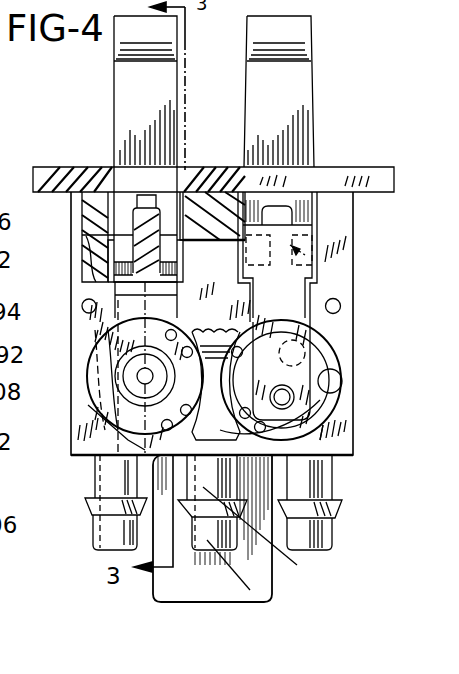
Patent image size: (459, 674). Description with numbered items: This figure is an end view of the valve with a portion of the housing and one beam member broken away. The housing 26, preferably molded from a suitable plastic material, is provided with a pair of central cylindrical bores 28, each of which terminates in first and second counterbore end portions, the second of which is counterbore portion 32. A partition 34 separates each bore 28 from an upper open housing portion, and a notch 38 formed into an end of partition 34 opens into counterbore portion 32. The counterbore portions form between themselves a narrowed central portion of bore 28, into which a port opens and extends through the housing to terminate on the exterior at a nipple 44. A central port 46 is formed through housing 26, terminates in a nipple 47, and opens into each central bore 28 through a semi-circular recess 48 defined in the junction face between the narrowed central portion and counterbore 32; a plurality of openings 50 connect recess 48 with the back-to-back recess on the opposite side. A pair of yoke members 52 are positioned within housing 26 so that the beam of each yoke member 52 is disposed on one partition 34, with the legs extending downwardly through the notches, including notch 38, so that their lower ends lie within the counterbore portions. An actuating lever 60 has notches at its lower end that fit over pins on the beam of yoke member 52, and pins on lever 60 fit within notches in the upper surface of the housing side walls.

The housing 26 is at (353, 285).
The central cylindrical bore 28 is at (140, 376).
The second counterbore end portion 32 is at (334, 390).
The partition 34 is at (120, 344).
The notch 38 is at (118, 312).
The nipple 44 is at (96, 476).
The central port 46 is at (297, 565).
The nipple 47 is at (206, 538).
The semi-circular recess 48 is at (146, 414).
The openings 50 is at (300, 390).
The yoke member 52 is at (300, 248).
The actuating lever 60 is at (250, 120).